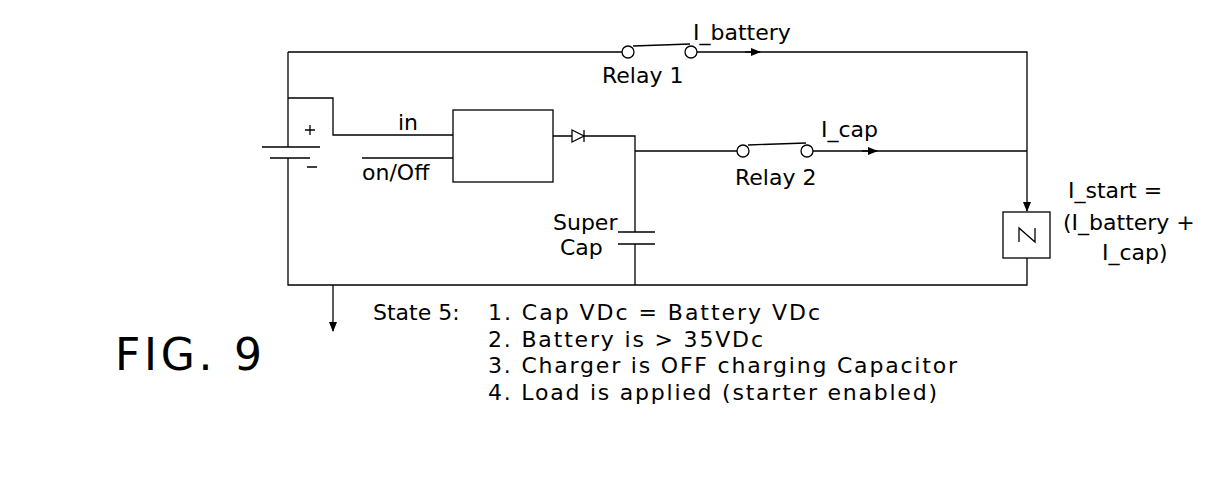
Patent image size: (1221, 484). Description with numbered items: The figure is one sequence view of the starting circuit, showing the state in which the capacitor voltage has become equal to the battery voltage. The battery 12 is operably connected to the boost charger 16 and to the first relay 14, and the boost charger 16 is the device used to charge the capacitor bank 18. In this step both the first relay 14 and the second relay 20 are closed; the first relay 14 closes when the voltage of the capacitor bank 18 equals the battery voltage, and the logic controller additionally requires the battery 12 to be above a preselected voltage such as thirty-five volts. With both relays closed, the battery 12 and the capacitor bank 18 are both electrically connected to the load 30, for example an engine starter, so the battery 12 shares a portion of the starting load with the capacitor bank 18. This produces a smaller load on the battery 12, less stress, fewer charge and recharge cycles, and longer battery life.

The battery 12 is at (278, 146).
The first relay 14 is at (655, 44).
The boost charger 16 is at (493, 110).
The capacitor bank 18 is at (645, 247).
The second relay 20 is at (778, 143).
The load 30 is at (1018, 210).